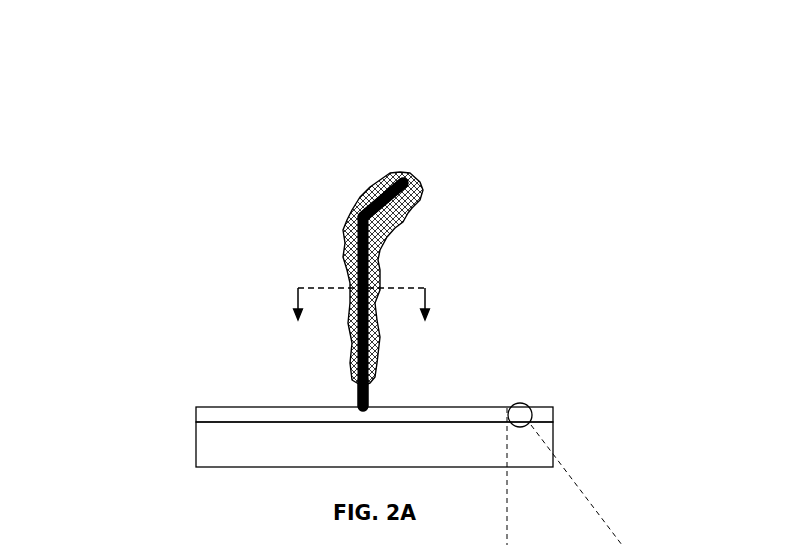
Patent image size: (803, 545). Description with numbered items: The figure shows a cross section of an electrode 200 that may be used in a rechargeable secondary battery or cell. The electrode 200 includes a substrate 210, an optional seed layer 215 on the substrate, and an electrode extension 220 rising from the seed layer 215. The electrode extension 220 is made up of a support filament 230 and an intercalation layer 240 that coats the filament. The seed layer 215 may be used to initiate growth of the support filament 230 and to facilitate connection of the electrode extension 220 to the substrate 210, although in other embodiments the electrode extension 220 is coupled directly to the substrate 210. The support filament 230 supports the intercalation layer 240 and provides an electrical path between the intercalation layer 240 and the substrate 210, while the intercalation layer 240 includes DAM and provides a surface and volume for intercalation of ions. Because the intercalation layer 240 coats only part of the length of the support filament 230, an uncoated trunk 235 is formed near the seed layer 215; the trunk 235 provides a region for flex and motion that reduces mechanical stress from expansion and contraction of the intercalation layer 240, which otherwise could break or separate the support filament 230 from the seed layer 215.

The electrode 200 is at (550, 132).
The substrate 210 is at (195, 444).
The seed layer 215 is at (195, 413).
The electrode extension 220 is at (372, 178).
The support filament 230 is at (355, 268).
The trunk 235 is at (373, 391).
The intercalation layer 240 is at (407, 213).